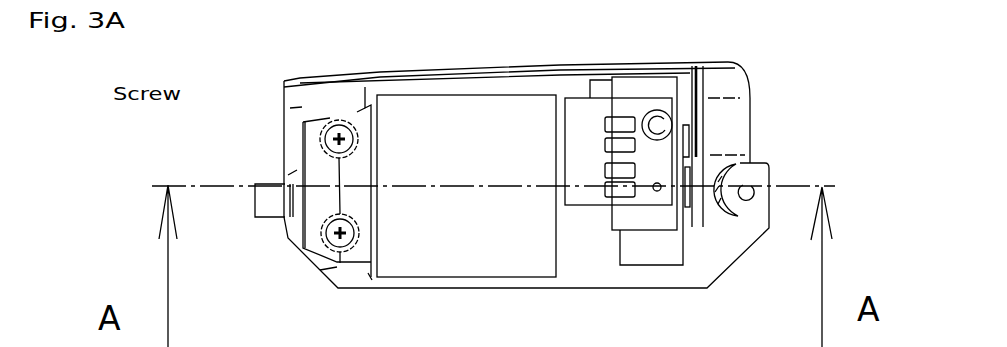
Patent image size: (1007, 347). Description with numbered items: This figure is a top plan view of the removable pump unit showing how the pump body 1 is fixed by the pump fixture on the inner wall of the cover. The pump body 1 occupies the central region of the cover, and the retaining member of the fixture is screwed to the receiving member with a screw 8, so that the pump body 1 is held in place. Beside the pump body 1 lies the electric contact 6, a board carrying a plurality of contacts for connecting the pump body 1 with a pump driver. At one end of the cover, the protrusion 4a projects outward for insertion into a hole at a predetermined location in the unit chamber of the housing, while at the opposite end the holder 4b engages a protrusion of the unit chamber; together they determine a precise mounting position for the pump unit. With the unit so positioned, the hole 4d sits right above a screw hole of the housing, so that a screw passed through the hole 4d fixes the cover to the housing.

The pump body 1 is at (583, 250).
The protrusion 4a is at (260, 216).
The holder 4b is at (748, 164).
The hole 4d is at (749, 186).
The electric contact 6 is at (587, 110).
The screw 8 is at (337, 124).